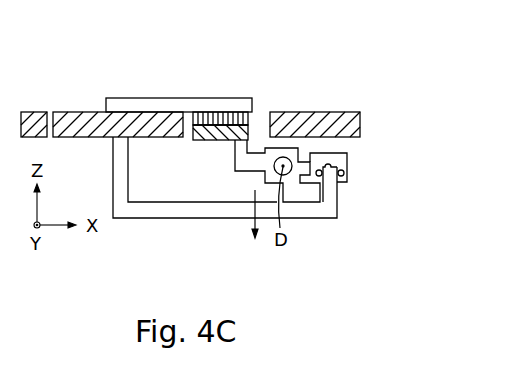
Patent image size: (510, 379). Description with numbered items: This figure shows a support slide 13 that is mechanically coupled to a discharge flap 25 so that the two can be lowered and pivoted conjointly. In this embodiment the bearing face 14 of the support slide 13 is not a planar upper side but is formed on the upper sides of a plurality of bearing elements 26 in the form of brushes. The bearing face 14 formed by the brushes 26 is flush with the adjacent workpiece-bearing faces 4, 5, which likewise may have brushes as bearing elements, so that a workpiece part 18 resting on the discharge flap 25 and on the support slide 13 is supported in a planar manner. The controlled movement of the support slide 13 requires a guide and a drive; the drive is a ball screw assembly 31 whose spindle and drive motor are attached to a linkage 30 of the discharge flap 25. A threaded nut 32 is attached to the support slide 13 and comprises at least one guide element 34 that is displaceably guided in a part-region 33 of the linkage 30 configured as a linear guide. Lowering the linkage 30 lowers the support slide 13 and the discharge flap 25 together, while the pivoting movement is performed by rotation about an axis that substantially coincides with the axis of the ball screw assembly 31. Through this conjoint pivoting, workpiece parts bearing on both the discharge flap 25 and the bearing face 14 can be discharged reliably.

The workpiece-bearing face 4 is at (33, 120).
The discharge flap 25 is at (85, 120).
The workpiece part 18 is at (145, 104).
The bearing face 14 is at (208, 113).
The bearing elements 26 is at (218, 118).
The support slide 13 is at (198, 131).
The threaded nut 32 is at (252, 168).
The ball screw assembly 31 is at (284, 165).
The workpiece-bearing face 5 is at (324, 120).
The guide element 34 is at (348, 155).
The linkage 30 is at (168, 210).
The part-region 33 is at (332, 190).